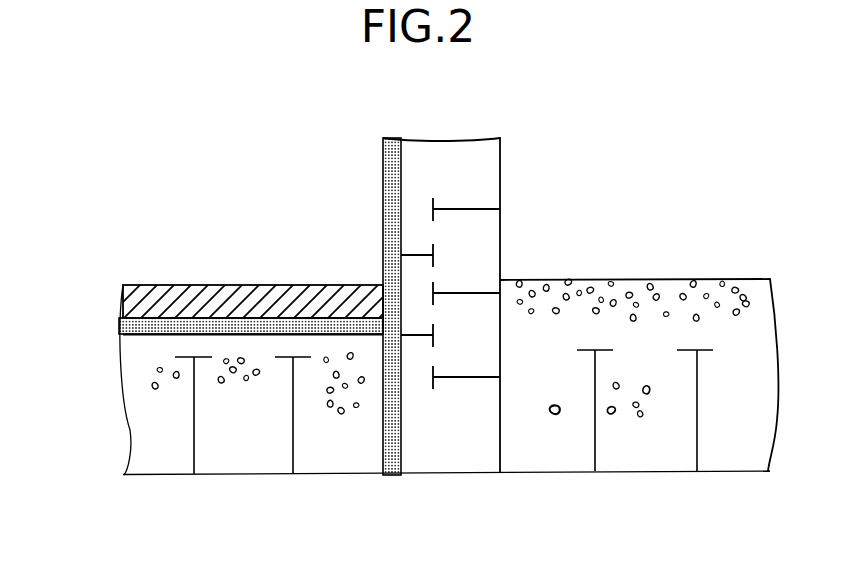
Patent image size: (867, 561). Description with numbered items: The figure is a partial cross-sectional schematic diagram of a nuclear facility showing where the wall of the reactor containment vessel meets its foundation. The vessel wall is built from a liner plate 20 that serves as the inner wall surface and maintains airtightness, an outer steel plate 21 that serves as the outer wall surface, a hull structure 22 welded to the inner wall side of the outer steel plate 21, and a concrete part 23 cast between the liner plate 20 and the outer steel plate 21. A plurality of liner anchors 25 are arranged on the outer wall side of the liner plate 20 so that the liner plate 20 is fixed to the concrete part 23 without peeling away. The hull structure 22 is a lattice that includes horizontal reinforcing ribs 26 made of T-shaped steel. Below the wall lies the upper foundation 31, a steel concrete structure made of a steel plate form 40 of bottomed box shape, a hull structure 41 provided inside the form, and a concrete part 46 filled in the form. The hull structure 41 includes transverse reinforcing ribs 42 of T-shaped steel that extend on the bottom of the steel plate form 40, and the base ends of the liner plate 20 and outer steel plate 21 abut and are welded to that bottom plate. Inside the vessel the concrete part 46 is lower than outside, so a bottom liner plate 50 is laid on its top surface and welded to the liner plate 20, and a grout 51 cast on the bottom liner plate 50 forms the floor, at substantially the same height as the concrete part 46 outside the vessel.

The liner plate 20 is at (383, 166).
The outer steel plate 21 is at (500, 162).
The hull structure 22 is at (459, 168).
The concrete part 23 is at (465, 458).
The liner anchors 25 is at (417, 333).
The horizontal reinforcing ribs 26 is at (478, 211).
The upper foundation 31 is at (794, 347).
The steel plate form 40 is at (722, 471).
The hull structure 41 is at (281, 430).
The transverse reinforcing ribs 42 is at (597, 447).
The concrete part 46 is at (146, 450).
The bottom liner plate 50 is at (153, 328).
The grout 51 is at (201, 294).